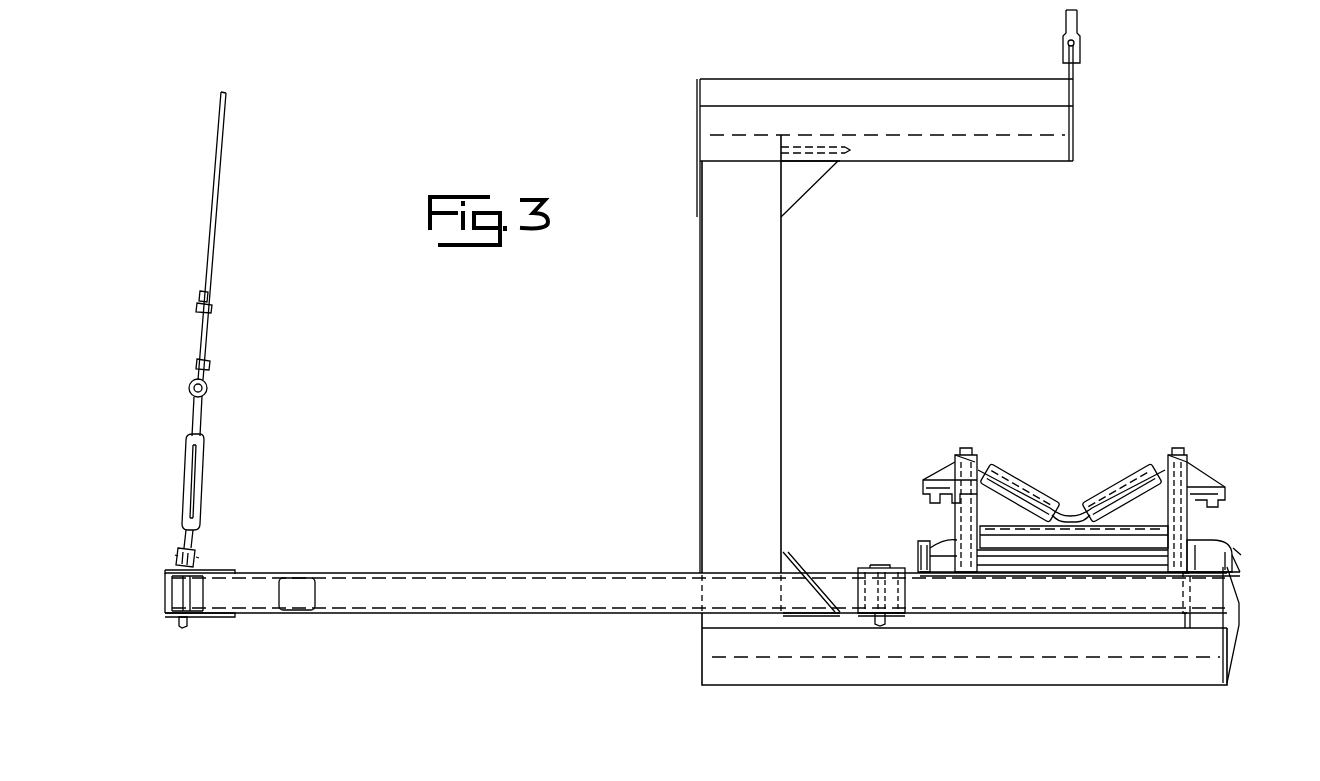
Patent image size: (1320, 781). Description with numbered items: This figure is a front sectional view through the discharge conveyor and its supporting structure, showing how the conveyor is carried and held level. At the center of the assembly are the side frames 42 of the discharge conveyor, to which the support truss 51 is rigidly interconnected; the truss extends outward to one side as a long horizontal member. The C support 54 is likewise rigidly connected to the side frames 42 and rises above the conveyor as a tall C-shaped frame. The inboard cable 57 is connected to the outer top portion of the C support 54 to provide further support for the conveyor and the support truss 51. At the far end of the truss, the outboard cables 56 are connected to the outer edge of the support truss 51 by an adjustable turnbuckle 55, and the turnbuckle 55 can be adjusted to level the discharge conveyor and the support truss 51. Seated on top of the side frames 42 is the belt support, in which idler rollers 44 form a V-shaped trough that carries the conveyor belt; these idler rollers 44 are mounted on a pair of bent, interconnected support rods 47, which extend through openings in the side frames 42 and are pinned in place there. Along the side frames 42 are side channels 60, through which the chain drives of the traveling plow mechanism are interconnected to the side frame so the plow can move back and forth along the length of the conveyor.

The side frames 42 is at (920, 558).
The idler rollers 44 is at (1046, 492).
The support rods 47 is at (1173, 458).
The support truss 51 is at (490, 598).
The C support 54 is at (702, 347).
The turnbuckle 55 is at (204, 460).
The outboard cables 56 is at (214, 186).
The inboard cable 57 is at (1082, 27).
The side channels 60 is at (952, 513).